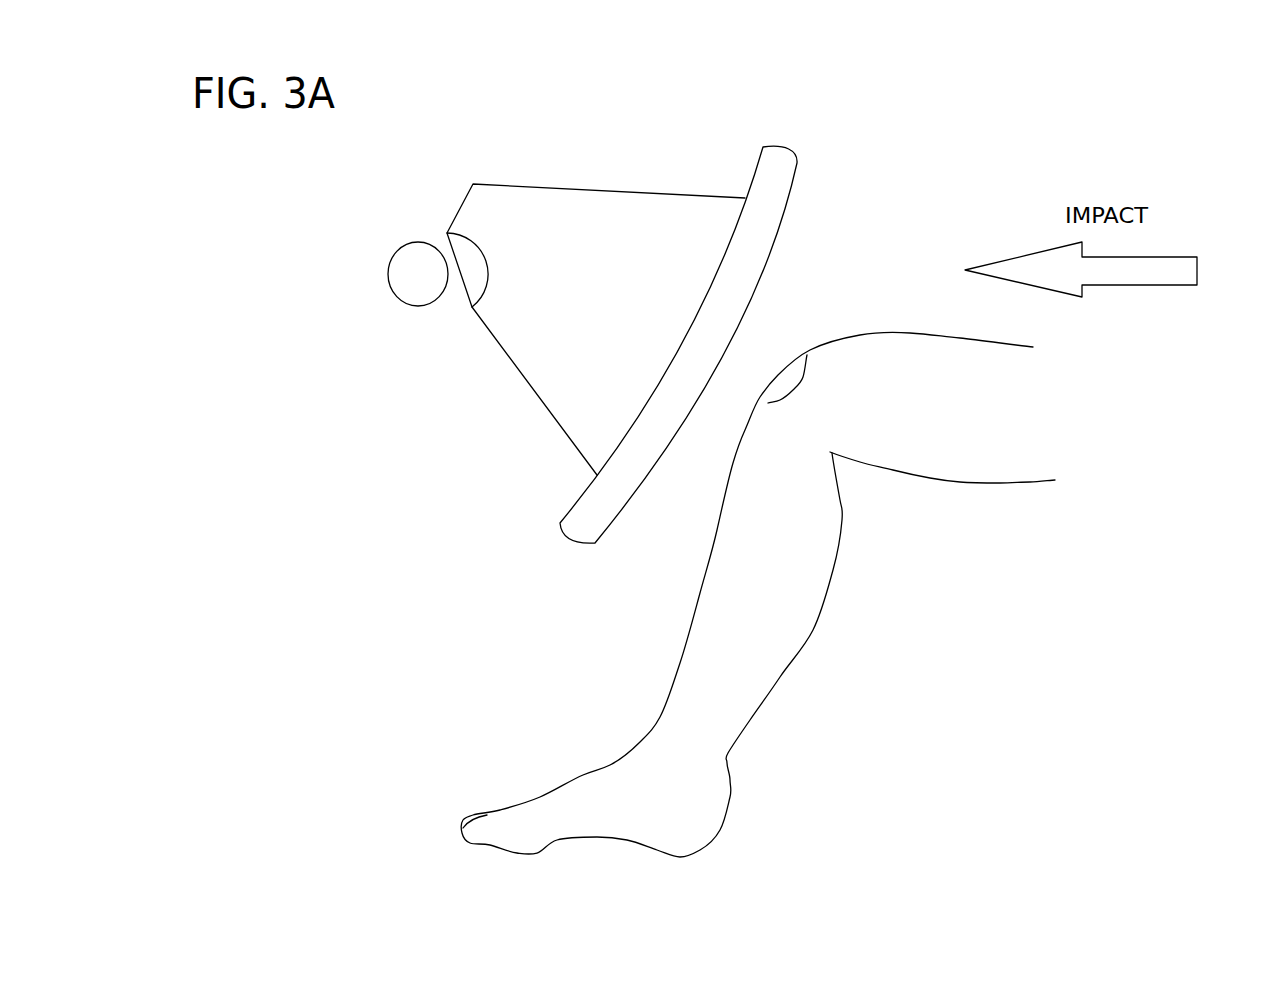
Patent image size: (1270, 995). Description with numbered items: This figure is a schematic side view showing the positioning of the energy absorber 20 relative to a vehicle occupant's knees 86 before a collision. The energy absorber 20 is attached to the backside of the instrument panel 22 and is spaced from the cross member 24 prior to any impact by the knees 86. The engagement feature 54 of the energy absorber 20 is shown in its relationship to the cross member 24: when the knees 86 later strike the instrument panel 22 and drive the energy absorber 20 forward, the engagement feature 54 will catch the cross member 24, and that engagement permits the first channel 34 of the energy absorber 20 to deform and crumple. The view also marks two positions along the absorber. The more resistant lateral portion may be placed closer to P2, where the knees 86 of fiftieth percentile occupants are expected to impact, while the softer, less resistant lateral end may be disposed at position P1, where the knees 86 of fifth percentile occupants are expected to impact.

The energy absorber 20 is at (607, 330).
The instrument panel 22 is at (788, 156).
The cross member 24 is at (424, 242).
The first channel 34 is at (596, 287).
The engagement feature 54 is at (485, 278).
The knees 86 is at (808, 350).
The position P1 is at (597, 474).
The position P2 is at (744, 197).